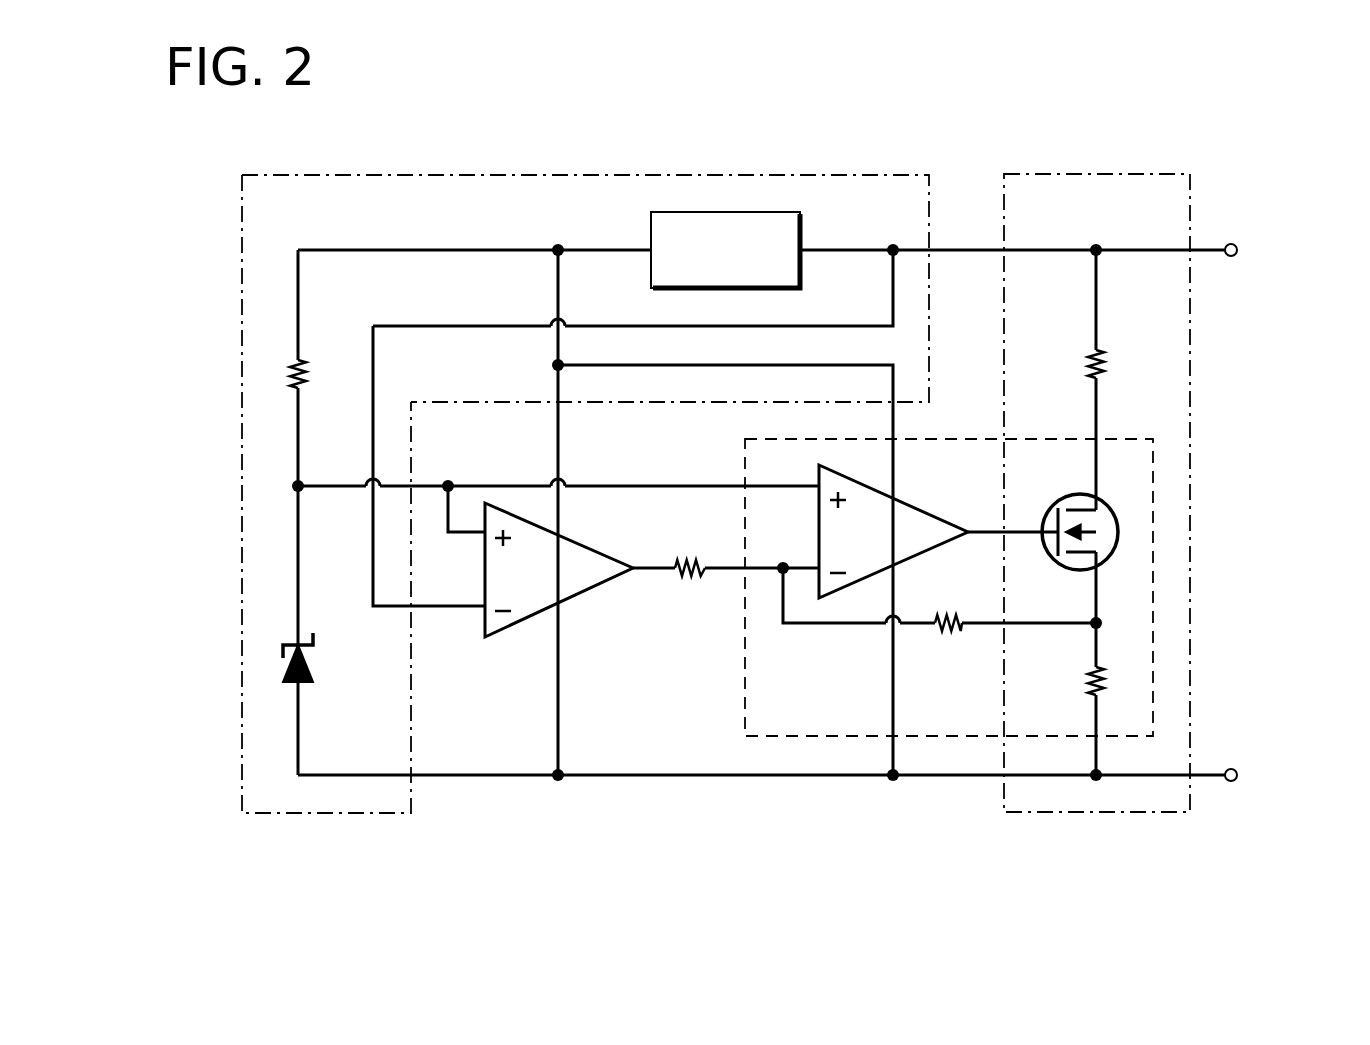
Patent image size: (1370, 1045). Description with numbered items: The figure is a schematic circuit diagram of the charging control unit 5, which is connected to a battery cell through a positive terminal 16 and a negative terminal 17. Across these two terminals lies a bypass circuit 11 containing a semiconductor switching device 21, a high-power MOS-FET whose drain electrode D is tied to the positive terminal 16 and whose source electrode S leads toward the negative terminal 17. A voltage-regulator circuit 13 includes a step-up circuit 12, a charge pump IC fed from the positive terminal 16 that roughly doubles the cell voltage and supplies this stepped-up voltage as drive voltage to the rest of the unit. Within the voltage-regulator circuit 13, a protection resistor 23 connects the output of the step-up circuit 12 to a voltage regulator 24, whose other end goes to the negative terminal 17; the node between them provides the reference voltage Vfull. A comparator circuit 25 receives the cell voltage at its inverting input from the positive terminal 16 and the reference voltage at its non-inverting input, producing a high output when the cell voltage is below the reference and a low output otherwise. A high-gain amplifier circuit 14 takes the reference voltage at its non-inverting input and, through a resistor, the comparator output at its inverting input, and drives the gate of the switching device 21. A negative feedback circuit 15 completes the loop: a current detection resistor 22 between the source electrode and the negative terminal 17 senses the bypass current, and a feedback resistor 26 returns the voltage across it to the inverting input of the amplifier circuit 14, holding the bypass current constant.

The charging control unit 5 is at (1218, 208).
The bypass circuit 11 is at (1161, 493).
The step-up circuit 12 is at (775, 212).
The voltage-regulator circuit 13 is at (293, 494).
The high-gain amplifier circuit 14 is at (867, 582).
The negative feedback circuit 15 is at (716, 692).
The positive terminal 16 is at (1243, 249).
The negative terminal 17 is at (1243, 775).
The semiconductor switching device 21 is at (1120, 525).
The current detection resistor 22 is at (1108, 683).
The protection resistor 23 is at (287, 372).
The voltage regulator 24 is at (283, 662).
The comparator circuit 25 is at (597, 590).
The feedback resistor 26 is at (940, 640).